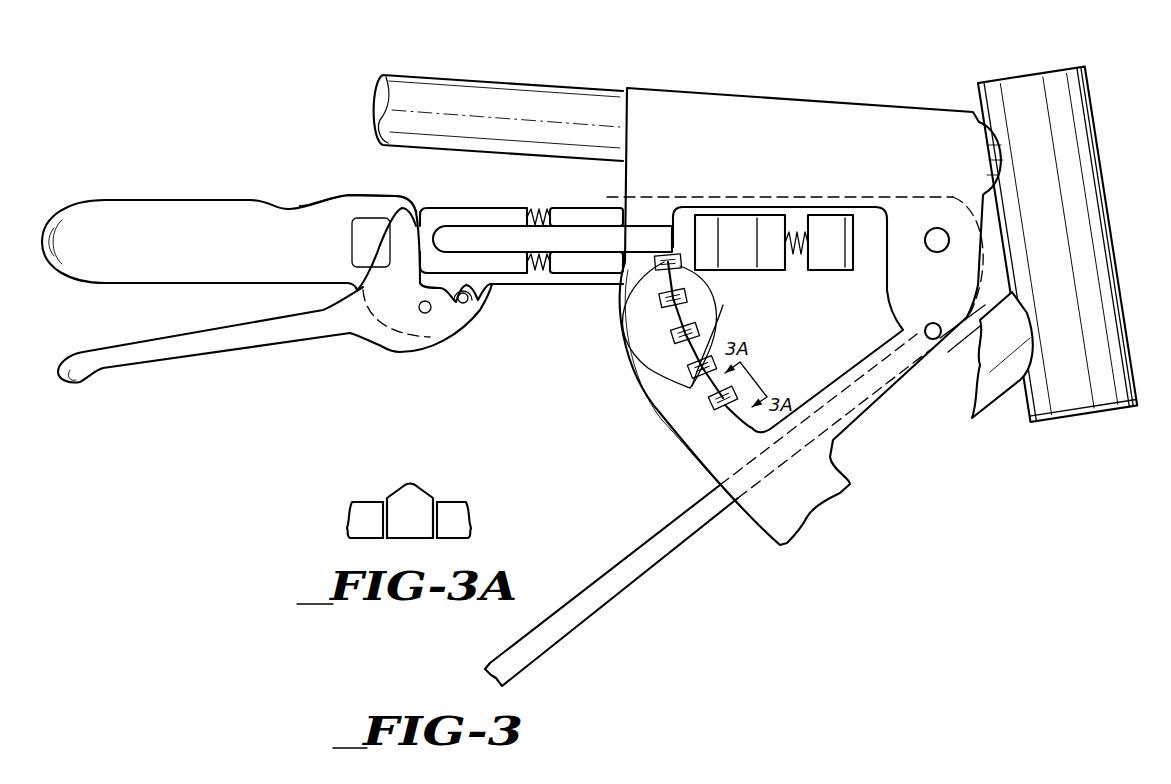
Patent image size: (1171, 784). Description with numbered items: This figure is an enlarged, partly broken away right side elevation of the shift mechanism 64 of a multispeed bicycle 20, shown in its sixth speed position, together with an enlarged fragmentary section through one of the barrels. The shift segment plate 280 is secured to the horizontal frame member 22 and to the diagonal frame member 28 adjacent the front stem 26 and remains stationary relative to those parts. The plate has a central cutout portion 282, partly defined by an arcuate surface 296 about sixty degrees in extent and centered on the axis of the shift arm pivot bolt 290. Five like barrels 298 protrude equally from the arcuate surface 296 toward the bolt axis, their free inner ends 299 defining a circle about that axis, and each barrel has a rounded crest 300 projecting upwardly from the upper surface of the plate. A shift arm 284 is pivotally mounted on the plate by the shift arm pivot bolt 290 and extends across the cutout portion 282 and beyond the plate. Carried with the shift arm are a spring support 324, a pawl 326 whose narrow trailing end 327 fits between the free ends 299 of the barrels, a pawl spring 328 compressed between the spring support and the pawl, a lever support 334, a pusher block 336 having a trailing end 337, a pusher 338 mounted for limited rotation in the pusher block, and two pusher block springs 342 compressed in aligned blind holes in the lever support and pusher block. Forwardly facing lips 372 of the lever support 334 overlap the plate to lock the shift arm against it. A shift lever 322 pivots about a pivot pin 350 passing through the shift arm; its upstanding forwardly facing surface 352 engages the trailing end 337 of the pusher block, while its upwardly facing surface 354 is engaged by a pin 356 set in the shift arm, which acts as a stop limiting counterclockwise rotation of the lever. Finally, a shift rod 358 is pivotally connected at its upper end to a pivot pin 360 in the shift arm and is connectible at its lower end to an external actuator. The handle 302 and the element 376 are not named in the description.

In FIG. 3, the multispeed bicycle 20 is at (1063, 281).
In FIG. 3, the horizontal frame member 22 is at (482, 95).
In FIG. 3, the front stem 26 is at (1082, 207).
In FIG. 3, the diagonal frame member 28 is at (1002, 370).
In FIG. 3, the shift mechanism 64 is at (533, 283).
In FIG. 3, the shift segment plate 280 is at (748, 110).
In FIG. 3A, the shift segment plate 280 is at (460, 487).
In FIG. 3, the central cutout portion 282 is at (845, 342).
In FIG. 3, the shift arm 284 is at (283, 192).
In FIG. 3, the shift arm pivot bolt 290 is at (937, 227).
In FIG. 3, the arcuate surface 296 is at (628, 316).
In FIG. 3A, the arcuate surface 296 is at (463, 518).
In FIG. 3, the barrels 298 is at (662, 368).
In FIG. 3A, the barrels 298 is at (405, 510).
In FIG. 3, the free inner ends 299 is at (680, 268).
In FIG. 3A, the rounded crest 300 is at (411, 484).
In FIG. 3, the handle 302 is at (136, 212).
In FIG. 3, the shift lever 322 is at (238, 352).
In FIG. 3, the spring support 324 is at (840, 222).
In FIG. 3, the pawl 326 is at (748, 222).
In FIG. 3, the trailing end 327 is at (668, 240).
In FIG. 3, the pawl spring 328 is at (800, 230).
In FIG. 3, the lever support 334 is at (588, 212).
In FIG. 3, the pusher block 336 is at (443, 217).
In FIG. 3, the trailing end 337 is at (395, 232).
In FIG. 3, the pusher 338 is at (472, 233).
In FIG. 3, the pusher block springs 342 is at (540, 212).
In FIG. 3, the pivot pin 350 is at (422, 313).
In FIG. 3, the upstanding forwardly facing surface 352 is at (397, 199).
In FIG. 3, the upwardly facing surface 354 is at (484, 306).
In FIG. 3, the pin 356 is at (463, 304).
In FIG. 3, the shift rod 358 is at (606, 595).
In FIG. 3, the pivot pin 360 is at (936, 341).
In FIG. 3, the forwardly facing lips 372 is at (618, 212).
In FIG. 3, the cavity wall 376 is at (688, 230).